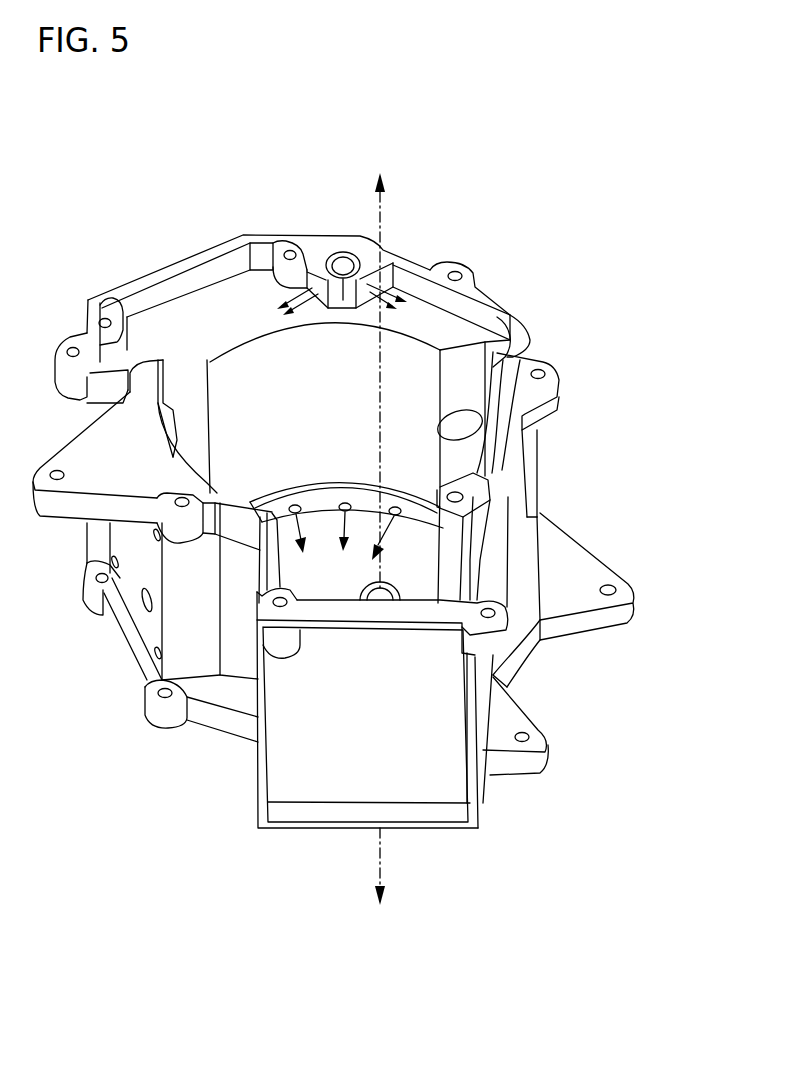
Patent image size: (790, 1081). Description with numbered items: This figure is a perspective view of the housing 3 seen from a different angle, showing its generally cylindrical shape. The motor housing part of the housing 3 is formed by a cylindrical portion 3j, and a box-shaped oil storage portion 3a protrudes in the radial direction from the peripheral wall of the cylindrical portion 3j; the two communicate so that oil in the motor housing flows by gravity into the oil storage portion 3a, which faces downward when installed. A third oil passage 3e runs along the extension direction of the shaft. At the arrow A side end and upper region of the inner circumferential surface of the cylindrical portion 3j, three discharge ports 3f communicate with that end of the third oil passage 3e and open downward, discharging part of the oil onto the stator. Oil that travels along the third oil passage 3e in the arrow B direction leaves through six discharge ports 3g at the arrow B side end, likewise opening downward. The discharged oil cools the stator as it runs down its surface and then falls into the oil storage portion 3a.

The housing 3 is at (506, 182).
The oil storage portion 3a is at (255, 672).
The third oil passage 3e is at (343, 258).
The discharge ports 3f is at (394, 507).
The discharge ports 3g is at (376, 278).
The cylindrical portion 3j is at (540, 468).